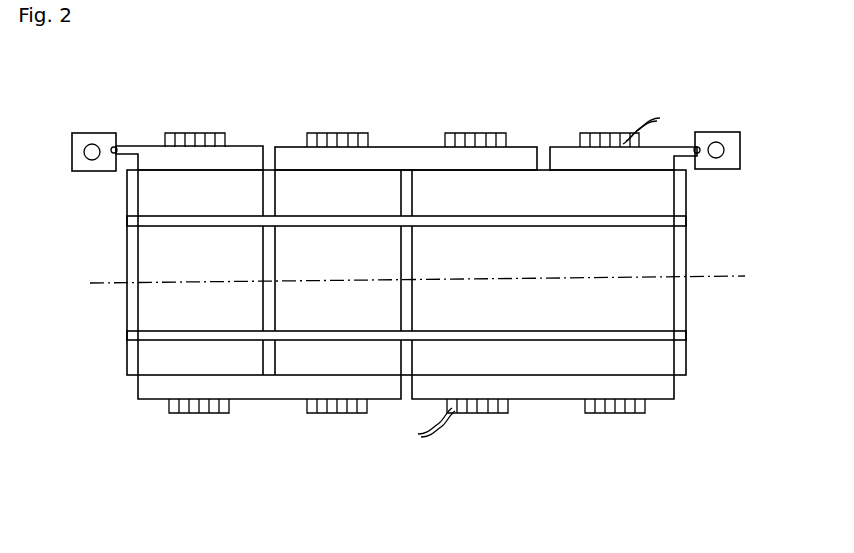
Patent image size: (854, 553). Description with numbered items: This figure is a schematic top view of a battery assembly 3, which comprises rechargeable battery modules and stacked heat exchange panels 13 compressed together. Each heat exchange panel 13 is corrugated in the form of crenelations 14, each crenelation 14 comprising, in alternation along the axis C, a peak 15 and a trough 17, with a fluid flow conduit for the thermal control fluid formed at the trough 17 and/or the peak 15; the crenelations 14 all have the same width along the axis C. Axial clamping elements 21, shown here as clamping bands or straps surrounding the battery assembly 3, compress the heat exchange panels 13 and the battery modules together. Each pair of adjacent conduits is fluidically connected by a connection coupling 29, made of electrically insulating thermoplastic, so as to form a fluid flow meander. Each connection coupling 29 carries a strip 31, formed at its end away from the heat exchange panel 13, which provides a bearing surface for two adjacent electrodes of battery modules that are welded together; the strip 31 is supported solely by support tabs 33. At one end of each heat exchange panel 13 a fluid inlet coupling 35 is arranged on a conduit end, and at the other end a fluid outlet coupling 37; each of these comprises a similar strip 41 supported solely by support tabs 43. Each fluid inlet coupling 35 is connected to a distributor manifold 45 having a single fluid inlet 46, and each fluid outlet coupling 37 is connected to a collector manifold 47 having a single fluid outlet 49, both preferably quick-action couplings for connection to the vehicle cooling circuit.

The battery assembly 3 is at (141, 111).
The heat exchange panel 13 is at (126, 248).
The crenelation 14 is at (266, 468).
The peak 15 is at (205, 358).
The trough 17 is at (327, 359).
The axial clamping element 21 is at (687, 222).
The connection coupling 29 is at (400, 147).
The strip 31 is at (337, 133).
The support tab 33 is at (418, 436).
The fluid inlet coupling 35 is at (263, 146).
The fluid outlet coupling 37 is at (563, 147).
The strip 41 is at (195, 133).
The support tab 43 is at (660, 118).
The distributor manifold 45 is at (90, 133).
The fluid inlet 46 is at (85, 152).
The collector manifold 47 is at (722, 132).
The fluid outlet 49 is at (725, 150).
The axis C is at (419, 264).